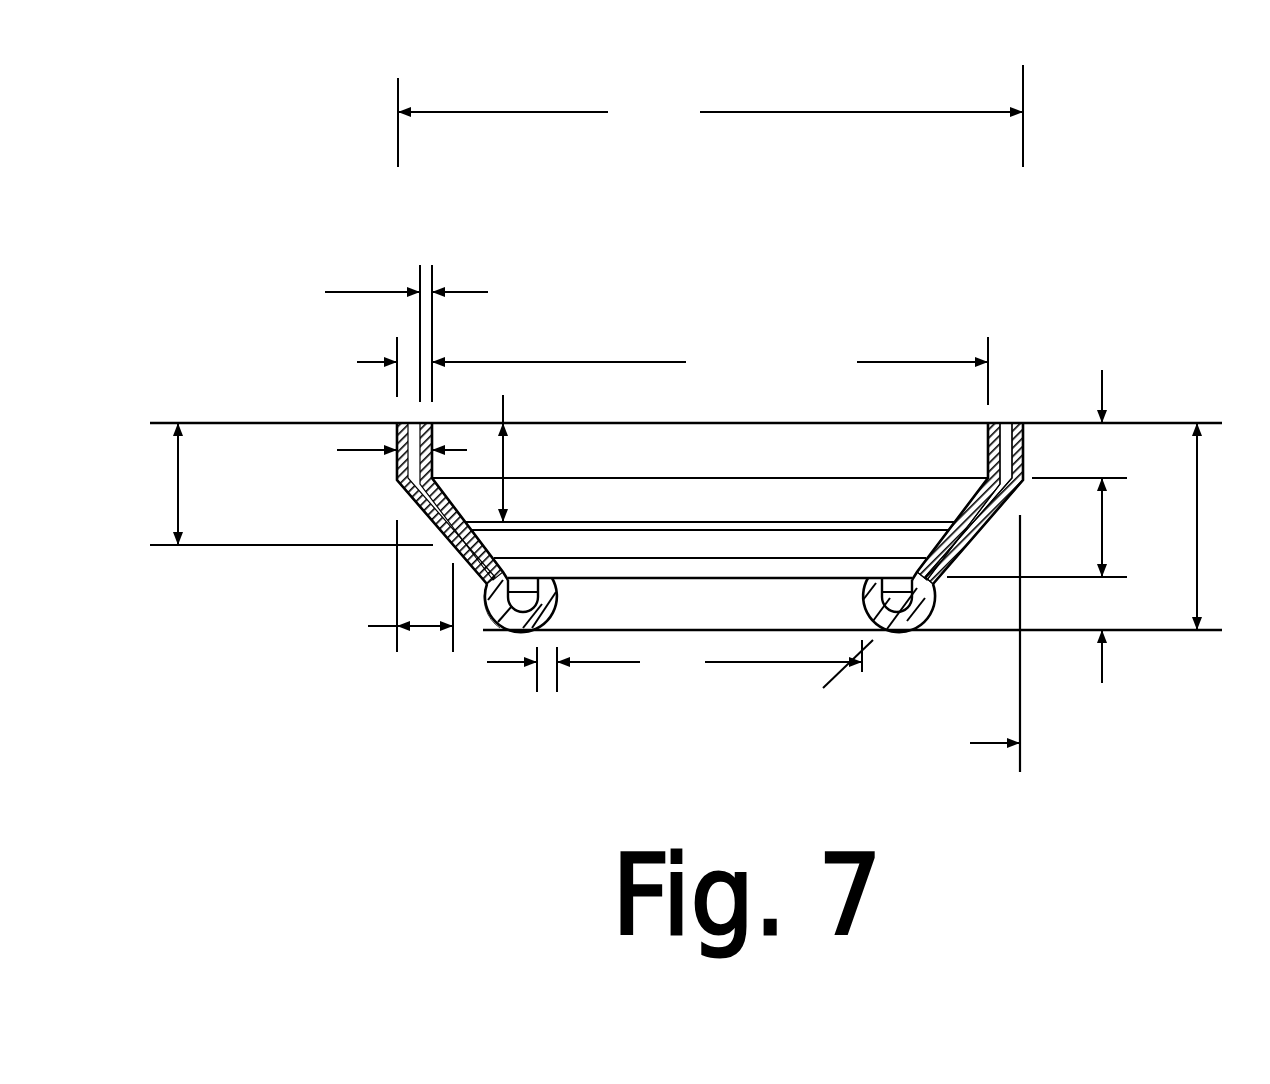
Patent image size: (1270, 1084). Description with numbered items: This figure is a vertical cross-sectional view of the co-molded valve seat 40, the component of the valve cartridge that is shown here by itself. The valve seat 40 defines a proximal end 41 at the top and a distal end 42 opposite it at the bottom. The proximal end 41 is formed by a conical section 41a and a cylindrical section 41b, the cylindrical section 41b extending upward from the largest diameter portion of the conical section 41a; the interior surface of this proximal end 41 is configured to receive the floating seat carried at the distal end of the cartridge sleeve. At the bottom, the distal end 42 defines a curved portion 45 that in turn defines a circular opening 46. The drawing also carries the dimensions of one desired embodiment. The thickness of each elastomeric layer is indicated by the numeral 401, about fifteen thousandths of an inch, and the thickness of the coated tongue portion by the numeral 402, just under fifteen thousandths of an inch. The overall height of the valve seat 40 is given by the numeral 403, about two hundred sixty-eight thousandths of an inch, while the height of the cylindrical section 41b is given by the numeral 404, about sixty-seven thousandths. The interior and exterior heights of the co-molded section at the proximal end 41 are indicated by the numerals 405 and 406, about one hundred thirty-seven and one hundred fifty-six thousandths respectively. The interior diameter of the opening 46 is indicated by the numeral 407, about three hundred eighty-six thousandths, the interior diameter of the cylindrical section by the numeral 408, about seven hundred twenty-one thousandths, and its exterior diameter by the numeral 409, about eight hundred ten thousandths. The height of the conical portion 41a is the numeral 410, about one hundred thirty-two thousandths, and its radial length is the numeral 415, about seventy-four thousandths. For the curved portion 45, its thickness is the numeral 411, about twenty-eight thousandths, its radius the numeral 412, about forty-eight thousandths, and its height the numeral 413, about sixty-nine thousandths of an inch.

The valve seat 40 is at (1067, 295).
The proximal end 41 is at (767, 423).
The conical section 41a is at (962, 502).
The cylindrical section 41b is at (1000, 460).
The distal end 42 is at (722, 632).
The curved portion 45 is at (892, 626).
The circular opening 46 is at (556, 583).
The thickness of each elastomeric layer 401 is at (366, 333).
The thickness of the coated tongue portion 402 is at (362, 457).
The height of the valve seat 403 is at (1206, 526).
The height of the cylindrical section 404 is at (1111, 378).
The interior height of the co-molded section 405 is at (503, 405).
The exterior height of the co-molded section 406 is at (173, 484).
The interior diameter of the opening 407 is at (709, 663).
The interior diameter of the cylindrical section 408 is at (672, 371).
The exterior diameter of the cylindrical section 409 is at (710, 116).
The height of the conical portion 410 is at (1083, 527).
The thickness of the curved portion 411 is at (517, 681).
The radius of the curved portion 412 is at (500, 628).
The height of the curved portion 413 is at (1141, 663).
The radial length of the conical portion 415 is at (377, 586).